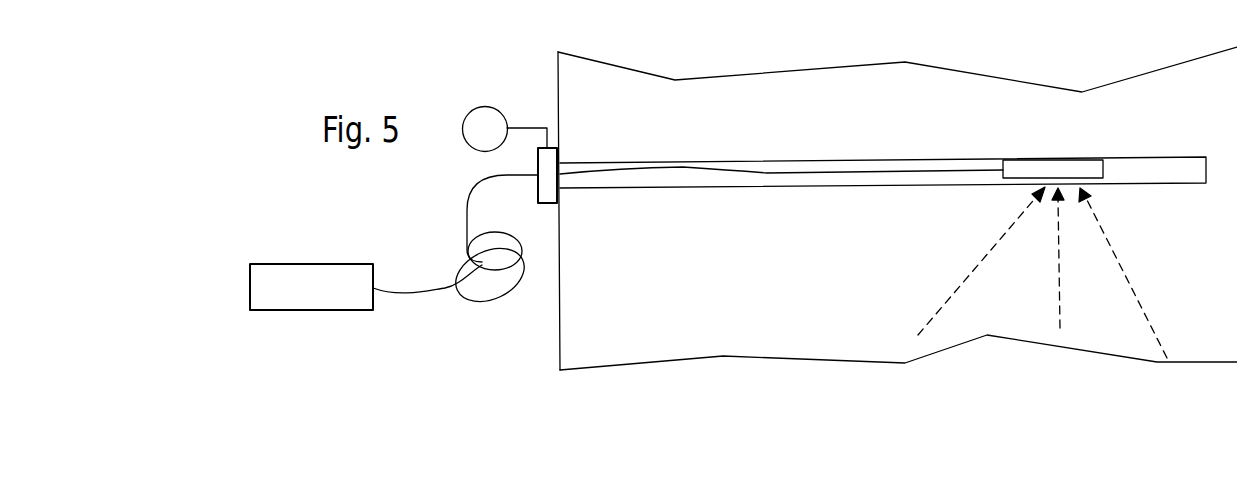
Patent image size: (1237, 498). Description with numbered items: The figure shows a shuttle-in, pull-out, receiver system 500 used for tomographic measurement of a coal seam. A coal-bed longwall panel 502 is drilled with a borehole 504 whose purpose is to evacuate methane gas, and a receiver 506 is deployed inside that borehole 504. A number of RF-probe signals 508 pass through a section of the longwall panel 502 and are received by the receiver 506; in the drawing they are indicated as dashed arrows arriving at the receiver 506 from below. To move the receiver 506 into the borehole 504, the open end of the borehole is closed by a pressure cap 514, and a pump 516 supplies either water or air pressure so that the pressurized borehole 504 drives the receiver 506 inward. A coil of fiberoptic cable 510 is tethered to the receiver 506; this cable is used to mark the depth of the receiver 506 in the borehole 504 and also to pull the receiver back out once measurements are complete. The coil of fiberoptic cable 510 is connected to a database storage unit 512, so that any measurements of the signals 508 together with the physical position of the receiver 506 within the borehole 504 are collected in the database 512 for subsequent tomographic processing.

The shuttle-in, pull-out, receiver system 500 is at (769, 48).
The coal-bed longwall panel 502 is at (749, 317).
The borehole 504 is at (773, 160).
The receiver 506 is at (1012, 167).
The RF-probe signals 508 is at (968, 273).
The coil of fiberoptic cable 510 is at (463, 290).
The database storage unit 512 is at (300, 264).
The pressure cap 514 is at (537, 186).
The pump 516 is at (490, 107).